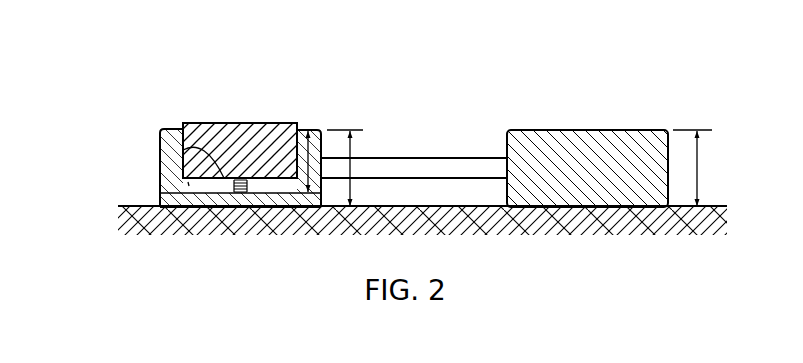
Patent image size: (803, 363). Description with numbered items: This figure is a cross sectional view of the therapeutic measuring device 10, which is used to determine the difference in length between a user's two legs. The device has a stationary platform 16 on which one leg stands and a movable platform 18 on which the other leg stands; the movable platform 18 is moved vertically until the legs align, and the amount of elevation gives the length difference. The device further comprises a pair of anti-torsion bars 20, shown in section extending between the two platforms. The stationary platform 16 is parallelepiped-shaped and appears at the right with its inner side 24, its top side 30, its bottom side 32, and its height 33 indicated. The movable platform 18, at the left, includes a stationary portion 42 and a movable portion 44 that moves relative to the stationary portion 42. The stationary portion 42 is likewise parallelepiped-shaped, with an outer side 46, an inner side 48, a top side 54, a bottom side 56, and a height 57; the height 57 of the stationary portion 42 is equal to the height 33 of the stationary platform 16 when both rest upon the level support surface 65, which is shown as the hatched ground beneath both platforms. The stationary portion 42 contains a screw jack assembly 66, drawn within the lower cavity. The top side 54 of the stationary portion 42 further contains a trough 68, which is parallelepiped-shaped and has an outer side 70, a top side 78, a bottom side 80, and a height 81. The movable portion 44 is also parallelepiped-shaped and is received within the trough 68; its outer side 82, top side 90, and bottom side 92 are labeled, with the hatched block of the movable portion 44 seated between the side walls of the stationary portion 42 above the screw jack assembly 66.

The therapeutic measuring device 10 is at (103, 122).
The stationary platform 16 is at (503, 197).
The movable platform 18 is at (157, 143).
The anti-torsion bars 20 is at (418, 155).
The inner side 24 is at (504, 142).
The top side 30 is at (572, 128).
The bottom side 32 is at (584, 210).
The height 33 is at (698, 167).
The stationary portion 42 is at (157, 172).
The movable portion 44 is at (210, 121).
The outer side 46 is at (160, 183).
The inner side 48 is at (328, 136).
The top side 54 is at (163, 129).
The bottom side 56 is at (172, 207).
The height 57 is at (354, 140).
The level support surface 65 is at (471, 231).
The screw jack assembly 66 is at (253, 184).
The trough 68 is at (125, 205).
The outer side 70 is at (224, 178).
The top side 78 is at (182, 120).
The bottom side 80 is at (205, 195).
The height 81 is at (310, 129).
The outer side 82 is at (157, 136).
The top side 90 is at (223, 177).
The bottom side 92 is at (269, 183).